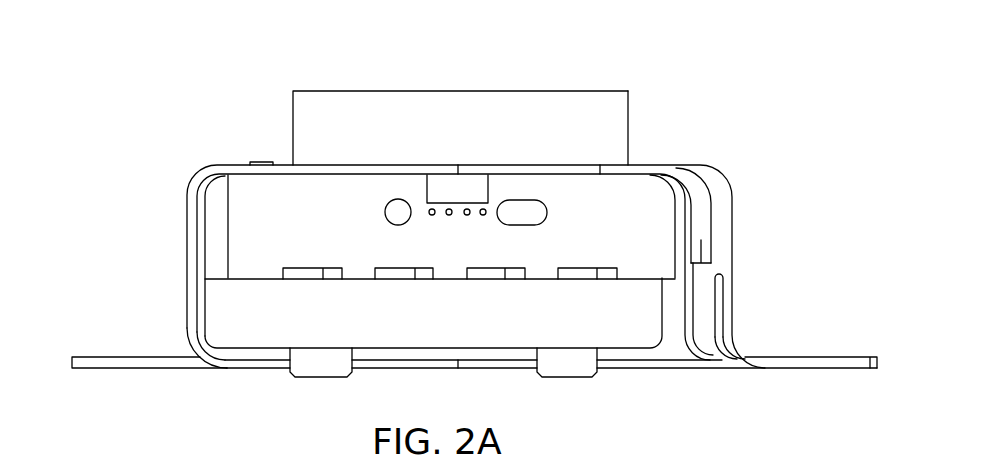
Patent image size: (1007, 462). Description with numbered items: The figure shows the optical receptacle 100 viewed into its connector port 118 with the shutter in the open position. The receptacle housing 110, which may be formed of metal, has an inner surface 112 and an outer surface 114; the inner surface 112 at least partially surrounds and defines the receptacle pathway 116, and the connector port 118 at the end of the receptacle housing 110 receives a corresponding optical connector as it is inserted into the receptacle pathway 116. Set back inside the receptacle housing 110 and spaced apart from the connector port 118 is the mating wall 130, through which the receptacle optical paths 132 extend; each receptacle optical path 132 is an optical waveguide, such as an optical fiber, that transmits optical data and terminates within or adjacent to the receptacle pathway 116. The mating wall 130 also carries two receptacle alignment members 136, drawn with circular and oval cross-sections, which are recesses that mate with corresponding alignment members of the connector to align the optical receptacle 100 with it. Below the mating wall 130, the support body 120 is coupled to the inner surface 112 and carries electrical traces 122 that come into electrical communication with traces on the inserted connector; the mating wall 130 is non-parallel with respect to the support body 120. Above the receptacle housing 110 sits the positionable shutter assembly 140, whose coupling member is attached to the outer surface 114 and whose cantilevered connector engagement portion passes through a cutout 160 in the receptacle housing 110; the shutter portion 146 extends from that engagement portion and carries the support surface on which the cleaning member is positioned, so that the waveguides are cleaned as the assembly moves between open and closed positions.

The optical receptacle 100 is at (456, 238).
The receptacle housing 110 is at (474, 278).
The inner surface 112 is at (204, 294).
The outer surface 114 is at (706, 309).
The receptacle pathway 116 is at (185, 255).
The connector port 118 is at (628, 370).
The support body 120 is at (280, 338).
The electrical trace 122 is at (488, 282).
The mating wall 130 is at (236, 247).
The receptacle optical path 132 is at (500, 232).
The receptacle alignment member 136 is at (386, 212).
The positionable shutter assembly 140 is at (439, 113).
The shutter portion 146 is at (620, 117).
The cutout 160 is at (734, 261).